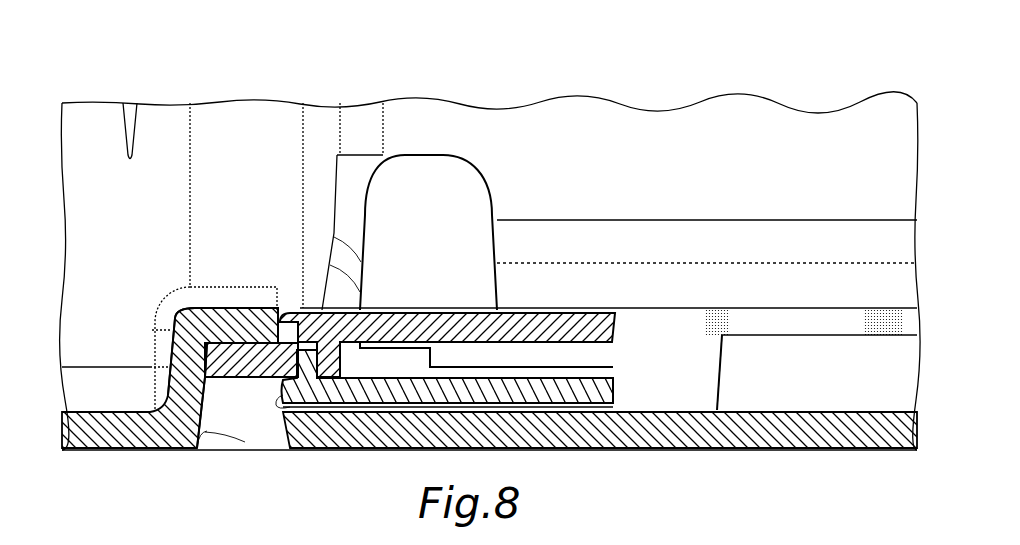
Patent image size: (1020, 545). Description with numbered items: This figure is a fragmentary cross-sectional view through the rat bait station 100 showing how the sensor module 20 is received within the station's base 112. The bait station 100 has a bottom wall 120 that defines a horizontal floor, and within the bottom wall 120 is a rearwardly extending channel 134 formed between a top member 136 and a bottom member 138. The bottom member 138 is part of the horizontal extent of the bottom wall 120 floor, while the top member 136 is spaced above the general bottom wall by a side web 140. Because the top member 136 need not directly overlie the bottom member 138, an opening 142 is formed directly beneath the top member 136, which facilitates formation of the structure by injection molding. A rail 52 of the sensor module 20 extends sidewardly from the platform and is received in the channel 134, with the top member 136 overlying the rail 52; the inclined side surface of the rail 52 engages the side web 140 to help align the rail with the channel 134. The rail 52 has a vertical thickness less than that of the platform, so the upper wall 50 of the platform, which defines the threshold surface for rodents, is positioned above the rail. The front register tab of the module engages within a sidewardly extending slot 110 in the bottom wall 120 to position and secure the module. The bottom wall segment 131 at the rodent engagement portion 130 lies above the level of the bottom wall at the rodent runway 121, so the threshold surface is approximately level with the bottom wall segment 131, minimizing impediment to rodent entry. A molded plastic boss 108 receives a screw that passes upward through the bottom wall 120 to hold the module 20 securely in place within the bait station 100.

The rat bait station 100 is at (68, 82).
The base 112 is at (80, 237).
The boss 108 is at (485, 172).
The rodent engagement portion 130 is at (645, 308).
The bottom wall segment 131 is at (698, 308).
The top member 136 is at (236, 300).
The side web 140 is at (168, 391).
The bottom wall 120 is at (748, 410).
The channel 134 is at (205, 403).
The opening 142 is at (203, 433).
The rail 52 is at (238, 378).
The upper wall 50 is at (541, 308).
The sensor module 20 is at (614, 390).
The bottom member 138 is at (285, 408).
The slot 110 is at (820, 337).
The rodent runway 121 is at (693, 410).